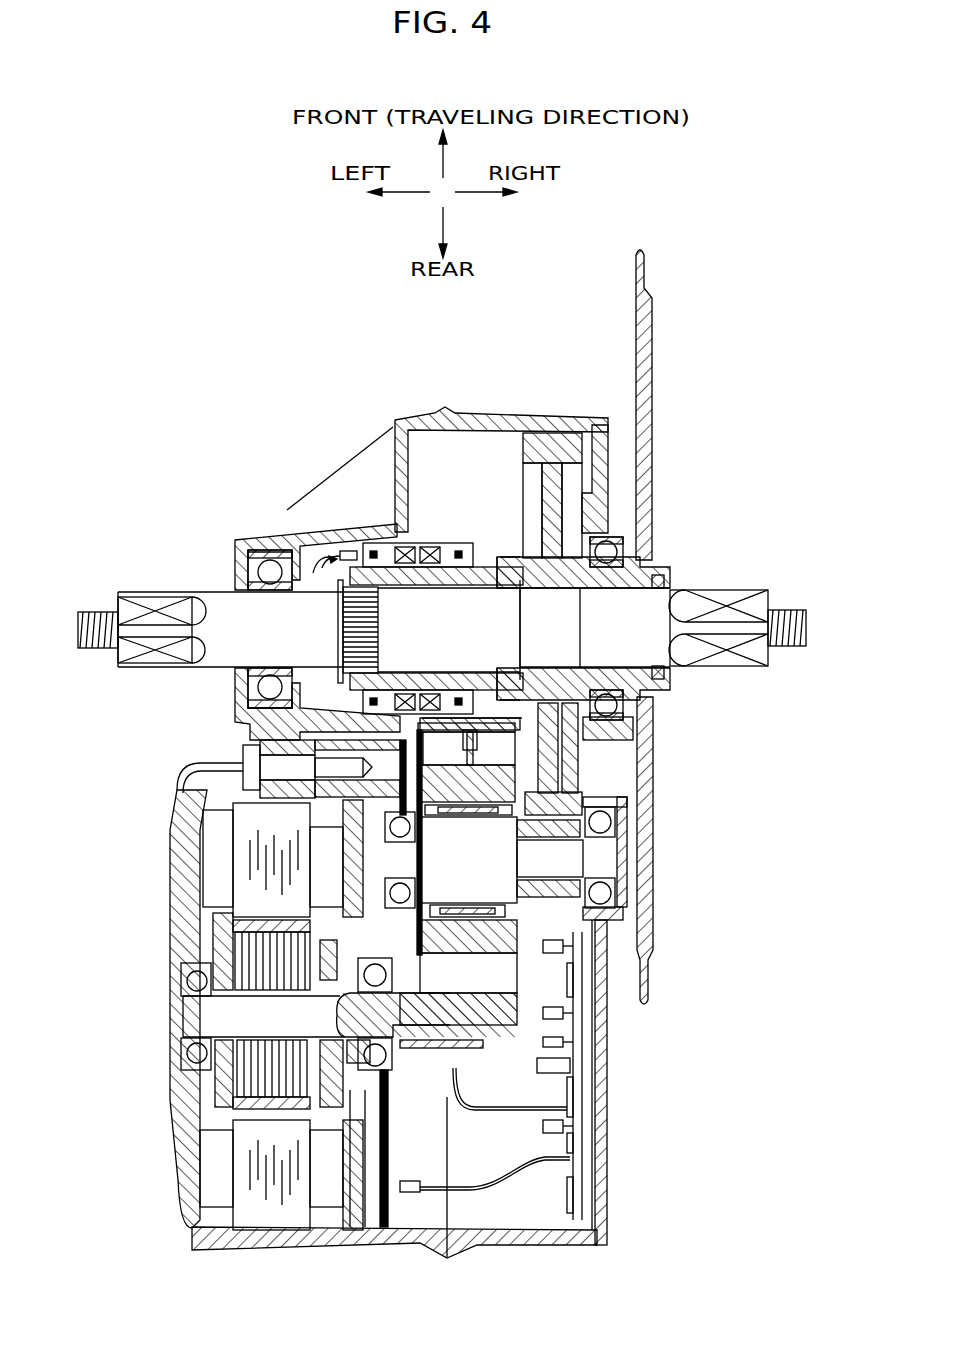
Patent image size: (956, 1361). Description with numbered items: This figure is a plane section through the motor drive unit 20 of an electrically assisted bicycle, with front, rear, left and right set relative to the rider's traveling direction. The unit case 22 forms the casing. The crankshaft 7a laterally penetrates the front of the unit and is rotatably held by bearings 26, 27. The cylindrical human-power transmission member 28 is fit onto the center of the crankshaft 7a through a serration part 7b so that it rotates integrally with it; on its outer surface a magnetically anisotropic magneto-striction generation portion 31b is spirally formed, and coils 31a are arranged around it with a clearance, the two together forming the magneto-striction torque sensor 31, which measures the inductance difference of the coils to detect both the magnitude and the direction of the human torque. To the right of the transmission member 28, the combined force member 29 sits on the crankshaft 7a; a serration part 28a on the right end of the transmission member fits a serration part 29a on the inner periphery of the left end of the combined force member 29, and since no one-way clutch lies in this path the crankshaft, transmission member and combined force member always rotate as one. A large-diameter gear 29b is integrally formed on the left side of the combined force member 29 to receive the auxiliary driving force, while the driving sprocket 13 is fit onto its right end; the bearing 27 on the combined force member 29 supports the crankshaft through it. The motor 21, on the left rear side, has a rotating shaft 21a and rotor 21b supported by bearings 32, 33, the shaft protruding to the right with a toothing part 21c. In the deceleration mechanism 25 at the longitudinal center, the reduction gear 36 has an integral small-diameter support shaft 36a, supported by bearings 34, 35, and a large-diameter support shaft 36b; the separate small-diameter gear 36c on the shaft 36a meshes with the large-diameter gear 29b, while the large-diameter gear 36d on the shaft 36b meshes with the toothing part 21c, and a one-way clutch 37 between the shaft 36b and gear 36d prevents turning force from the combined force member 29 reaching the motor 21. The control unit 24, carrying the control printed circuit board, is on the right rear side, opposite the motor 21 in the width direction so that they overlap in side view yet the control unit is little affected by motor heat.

The crankshaft 7a is at (657, 614).
The serration part 7b is at (330, 633).
The driving sprocket 13 is at (650, 308).
The motor drive unit 20 is at (222, 348).
The motor 21 is at (215, 1167).
The rotating shaft 21a is at (235, 1016).
The rotor 21b is at (240, 948).
The toothing part 21c is at (598, 1082).
The unit case 22 is at (470, 1258).
The control unit 24 is at (551, 1187).
The deceleration mechanism 25 is at (556, 966).
The bearing 26 is at (268, 570).
The bearing 27 is at (608, 548).
The human-power transmission member 28 is at (478, 560).
The serration part 28a is at (510, 560).
The serration part 29a is at (510, 628).
The large-diameter gear 29b is at (555, 443).
The combined force member 29 is at (660, 675).
The magneto-striction torque sensor 31 is at (445, 530).
The coils 31a is at (403, 540).
The magneto-striction generation portion 31b is at (353, 630).
The bearing 32 is at (197, 981).
The bearing 33 is at (367, 1057).
The bearing 34 is at (397, 833).
The bearing 35 is at (613, 820).
The reduction gear 36 is at (583, 942).
The small-diameter support shaft 36a is at (600, 860).
The large-diameter support shaft 36b is at (607, 880).
The small-diameter gear 36c is at (537, 920).
The large-diameter gear 36d is at (545, 1018).
The one-way clutch 37 is at (477, 800).